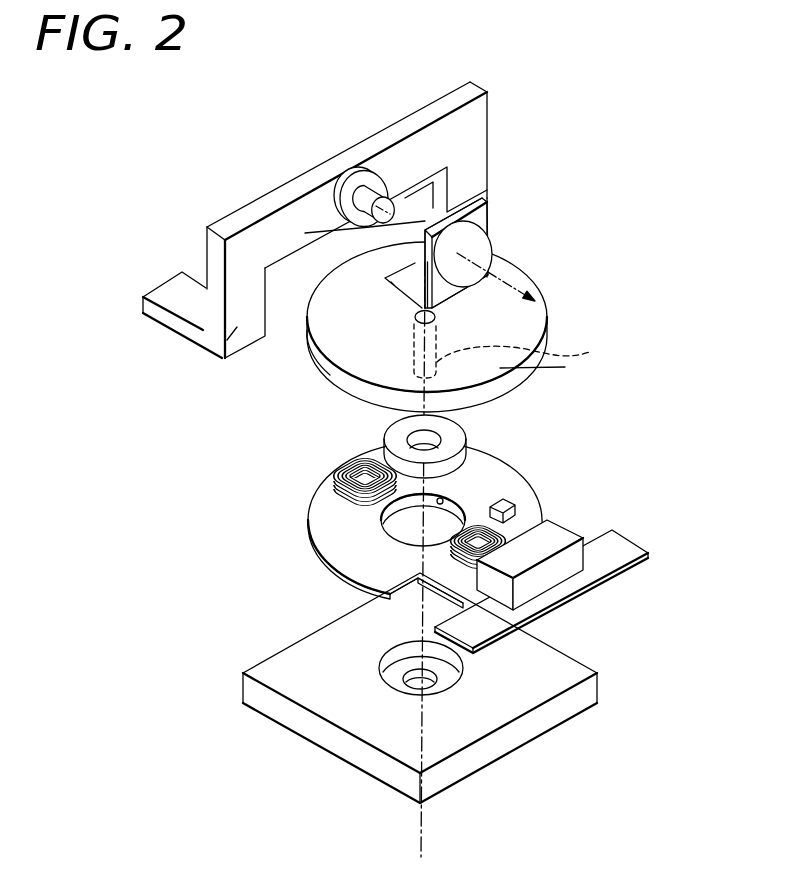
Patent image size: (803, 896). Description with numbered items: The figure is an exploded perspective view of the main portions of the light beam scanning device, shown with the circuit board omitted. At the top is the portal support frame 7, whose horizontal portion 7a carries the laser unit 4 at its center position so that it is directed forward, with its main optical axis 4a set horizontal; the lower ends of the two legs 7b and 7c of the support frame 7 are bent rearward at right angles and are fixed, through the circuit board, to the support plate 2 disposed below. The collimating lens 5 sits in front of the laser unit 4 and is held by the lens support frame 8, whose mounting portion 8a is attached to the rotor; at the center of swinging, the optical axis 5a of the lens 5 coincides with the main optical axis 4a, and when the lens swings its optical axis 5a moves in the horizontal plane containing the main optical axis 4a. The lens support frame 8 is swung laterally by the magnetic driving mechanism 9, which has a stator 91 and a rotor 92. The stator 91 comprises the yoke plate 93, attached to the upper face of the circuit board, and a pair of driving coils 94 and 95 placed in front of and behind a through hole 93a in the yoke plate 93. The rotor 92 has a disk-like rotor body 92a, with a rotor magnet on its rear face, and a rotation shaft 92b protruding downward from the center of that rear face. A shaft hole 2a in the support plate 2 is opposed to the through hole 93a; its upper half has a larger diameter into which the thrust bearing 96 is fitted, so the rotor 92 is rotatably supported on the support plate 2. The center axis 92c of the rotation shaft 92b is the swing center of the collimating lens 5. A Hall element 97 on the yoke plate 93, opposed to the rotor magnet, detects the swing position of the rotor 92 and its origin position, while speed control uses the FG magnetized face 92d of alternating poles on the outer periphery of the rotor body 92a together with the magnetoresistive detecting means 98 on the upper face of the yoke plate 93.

The support plate 2 is at (456, 688).
The shaft hole 2a is at (395, 682).
The laser unit 4 is at (322, 187).
The main optical axis 4a is at (386, 213).
The collimating lens 5 is at (483, 237).
The optical axis of the lens 5a is at (510, 269).
The portal support frame 7 is at (336, 223).
The horizontal portion 7a is at (412, 148).
The leg 7b is at (215, 362).
The leg 7c is at (477, 157).
The lens support frame 8 is at (410, 265).
The mounting flange 8a is at (143, 312).
The magnetic driving mechanism 9 is at (431, 530).
The stator 91 is at (360, 509).
The rotor 92 is at (432, 327).
The rotor body 92a is at (565, 367).
The rotation shaft 92b is at (590, 352).
The center axis 92c is at (422, 837).
The FG magnetized face 92d is at (310, 360).
The yoke plate 93 is at (628, 548).
The through hole 93a is at (441, 498).
The driving coil 94 is at (388, 596).
The driving coil 95 is at (327, 480).
The thrust bearing 96 is at (385, 437).
The Hall element 97 is at (506, 498).
The detecting means 98 is at (572, 532).